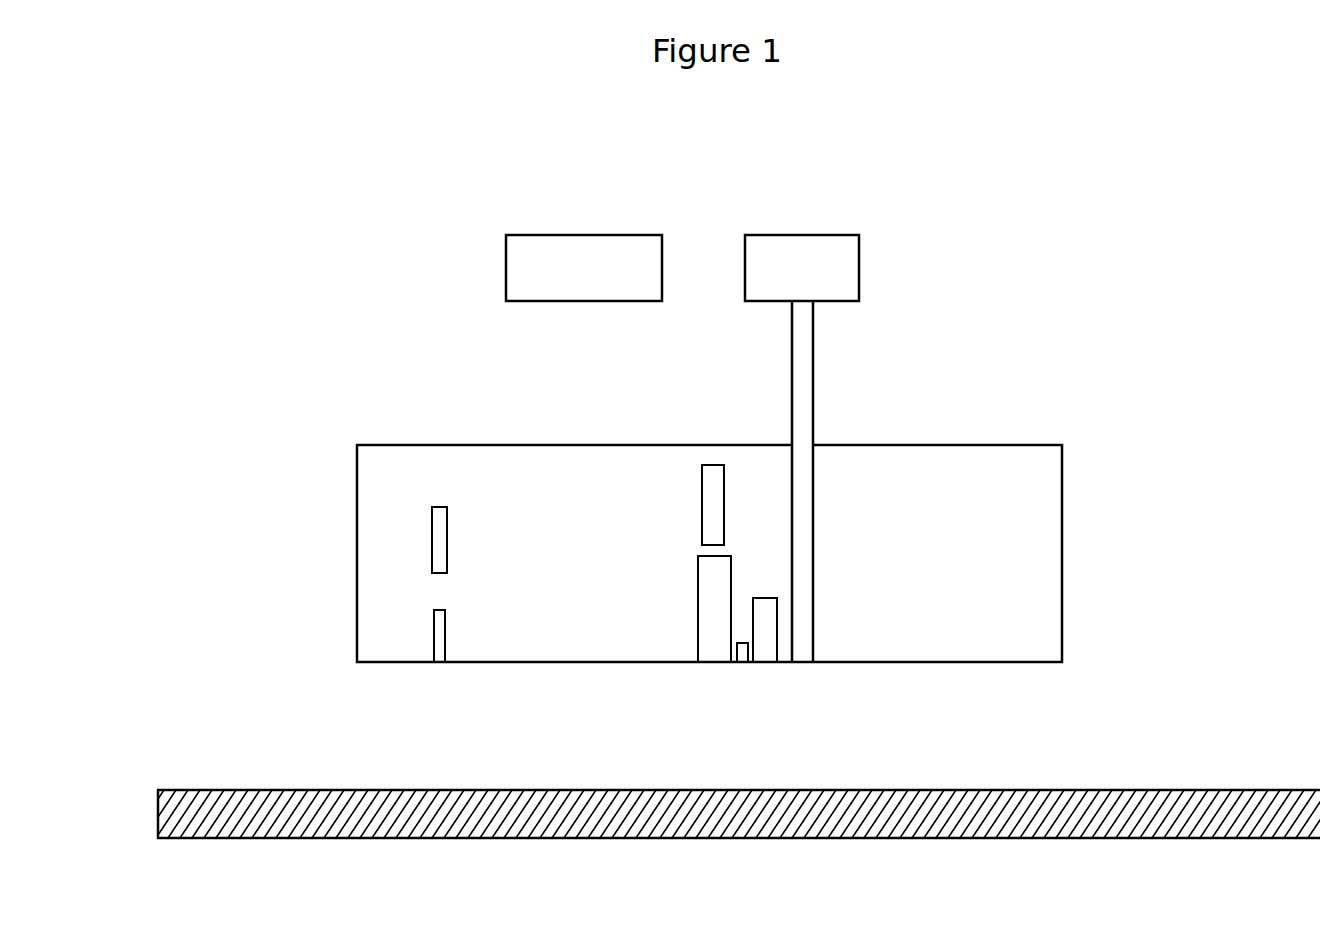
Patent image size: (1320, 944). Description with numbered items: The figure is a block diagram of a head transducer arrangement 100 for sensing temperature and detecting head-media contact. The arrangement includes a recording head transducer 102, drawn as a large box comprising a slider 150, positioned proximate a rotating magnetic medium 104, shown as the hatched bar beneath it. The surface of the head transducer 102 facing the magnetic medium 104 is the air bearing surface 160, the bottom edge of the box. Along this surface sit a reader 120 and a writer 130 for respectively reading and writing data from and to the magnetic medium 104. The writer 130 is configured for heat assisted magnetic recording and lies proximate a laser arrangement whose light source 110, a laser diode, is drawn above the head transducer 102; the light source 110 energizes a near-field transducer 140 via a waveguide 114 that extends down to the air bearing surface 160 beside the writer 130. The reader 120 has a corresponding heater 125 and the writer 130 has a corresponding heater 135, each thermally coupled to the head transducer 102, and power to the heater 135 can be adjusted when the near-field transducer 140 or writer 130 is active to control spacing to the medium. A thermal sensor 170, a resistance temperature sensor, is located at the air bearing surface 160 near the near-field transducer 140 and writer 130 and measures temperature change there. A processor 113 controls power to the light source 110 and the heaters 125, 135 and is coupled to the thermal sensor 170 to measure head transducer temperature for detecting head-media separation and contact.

The head transducer arrangement 100 is at (384, 130).
The processor 113 is at (506, 266).
The light source 110 is at (859, 262).
The waveguide 114 is at (814, 378).
The recording head transducer 102 is at (1062, 503).
The heater 125 is at (447, 543).
The reader 120 is at (445, 638).
The heater 135 is at (702, 510).
The writer 130 is at (698, 619).
The near-field transducer 140 is at (763, 598).
The thermal sensor 170 is at (747, 663).
The slider 150 is at (378, 683).
The air bearing surface 160 is at (868, 681).
The magnetic medium 104 is at (1270, 790).